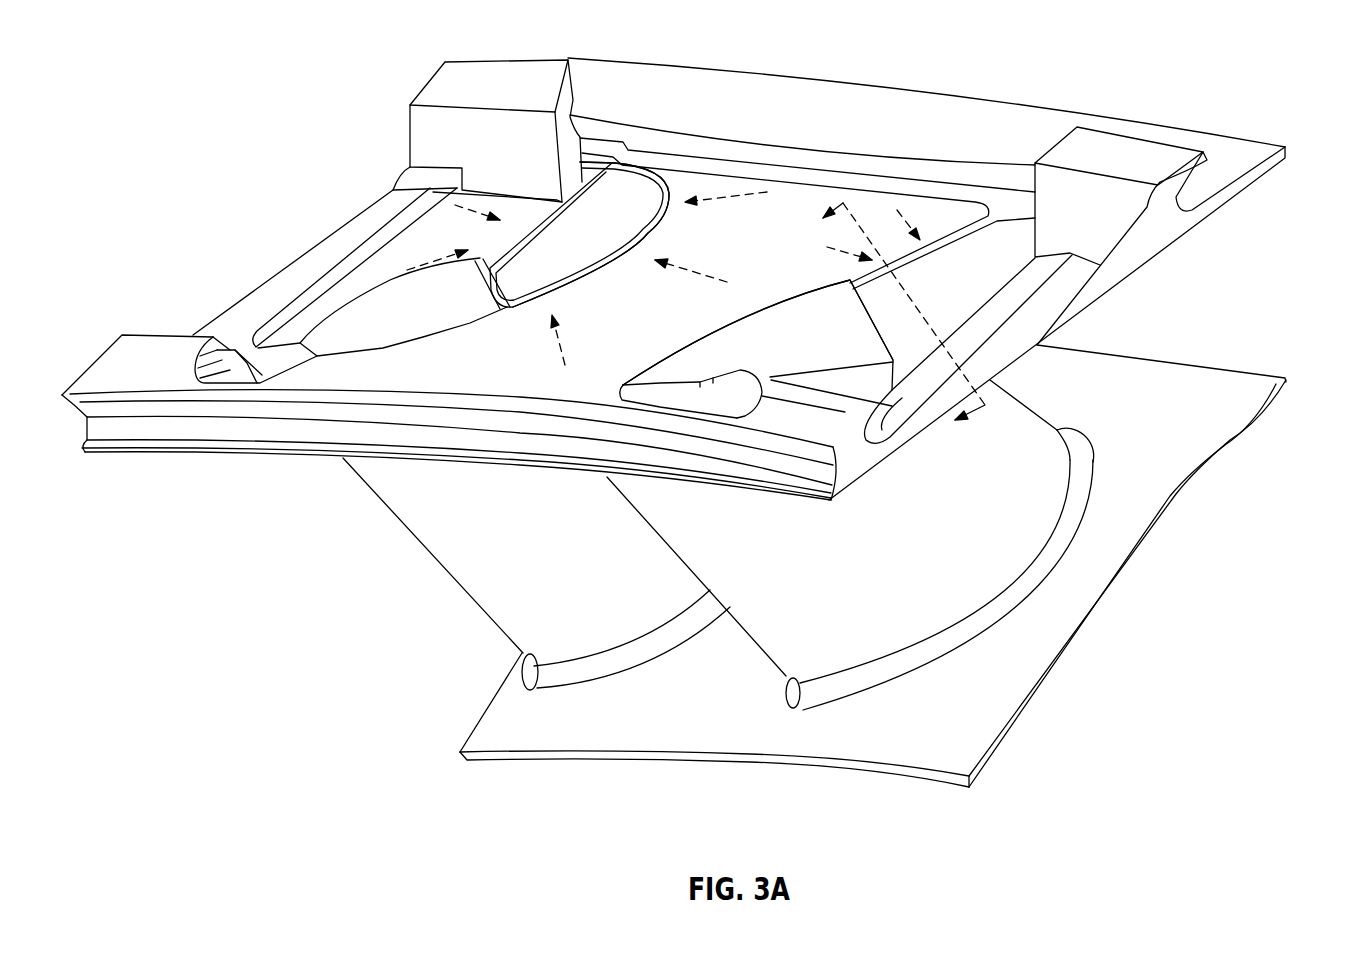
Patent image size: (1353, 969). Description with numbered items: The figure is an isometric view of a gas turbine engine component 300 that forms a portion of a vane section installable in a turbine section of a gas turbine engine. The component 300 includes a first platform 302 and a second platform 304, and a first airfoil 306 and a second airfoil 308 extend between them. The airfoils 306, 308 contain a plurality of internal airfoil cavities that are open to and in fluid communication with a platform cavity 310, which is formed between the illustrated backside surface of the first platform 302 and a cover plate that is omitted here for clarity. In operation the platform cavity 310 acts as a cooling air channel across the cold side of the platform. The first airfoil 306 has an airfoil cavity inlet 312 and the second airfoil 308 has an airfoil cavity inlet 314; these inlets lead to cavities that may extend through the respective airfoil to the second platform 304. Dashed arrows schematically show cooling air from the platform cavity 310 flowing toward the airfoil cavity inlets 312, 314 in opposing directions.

The gas turbine engine component 300 is at (1222, 72).
The first platform 302 is at (1253, 177).
The second platform 304 is at (1195, 390).
The first airfoil 306 is at (1015, 423).
The second airfoil 308 is at (440, 542).
The platform cavity 310 is at (650, 336).
The airfoil cavity inlet 312 is at (977, 270).
The airfoil cavity inlet 314 is at (613, 213).